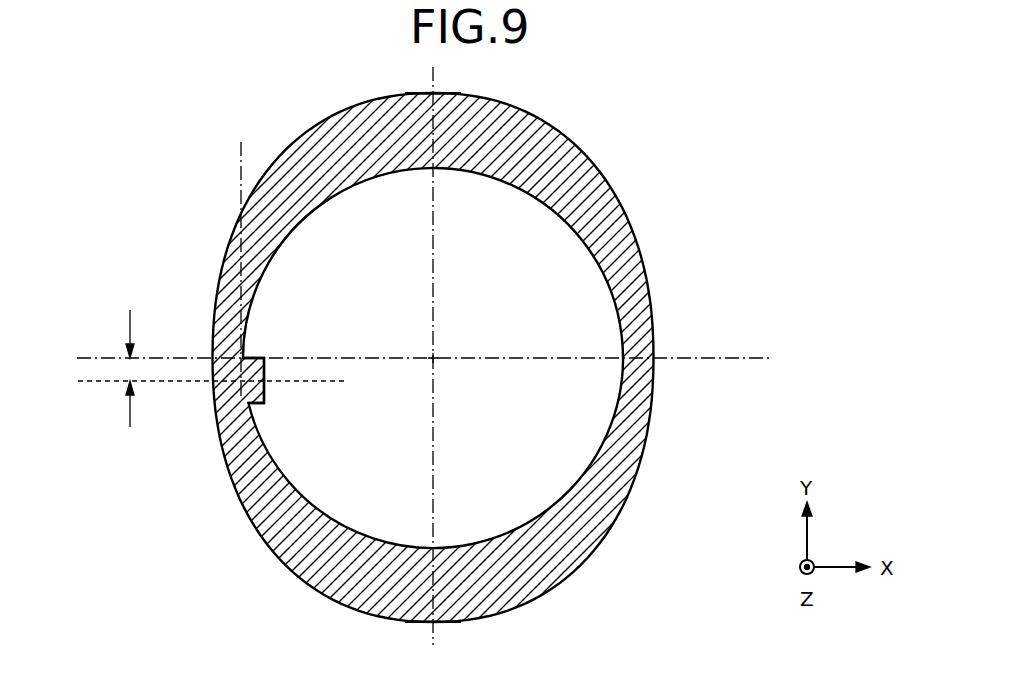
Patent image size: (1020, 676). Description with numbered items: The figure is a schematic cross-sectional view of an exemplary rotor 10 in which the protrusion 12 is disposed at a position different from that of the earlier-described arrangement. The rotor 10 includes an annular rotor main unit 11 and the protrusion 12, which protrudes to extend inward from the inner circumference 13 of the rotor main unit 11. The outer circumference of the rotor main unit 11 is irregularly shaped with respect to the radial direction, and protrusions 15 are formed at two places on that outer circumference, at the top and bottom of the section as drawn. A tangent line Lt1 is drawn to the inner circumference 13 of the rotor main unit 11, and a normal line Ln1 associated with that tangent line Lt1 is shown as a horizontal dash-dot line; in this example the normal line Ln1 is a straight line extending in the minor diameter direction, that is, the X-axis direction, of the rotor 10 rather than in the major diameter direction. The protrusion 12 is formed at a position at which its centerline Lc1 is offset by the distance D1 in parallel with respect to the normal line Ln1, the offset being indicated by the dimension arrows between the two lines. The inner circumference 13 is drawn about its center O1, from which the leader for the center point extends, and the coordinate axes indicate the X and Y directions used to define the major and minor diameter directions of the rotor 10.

The rotor 10 is at (510, 338).
The rotor main unit 11 is at (560, 173).
The protrusion 12 is at (250, 405).
The inner circumference 13 is at (612, 262).
The protrusions 15 is at (449, 93).
The center of inner circle O1 is at (433, 358).
The distance D1 is at (114, 368).
The normal line Ln1 is at (401, 357).
The centerline Lc1 is at (189, 390).
The tangent line Lt1 is at (241, 151).